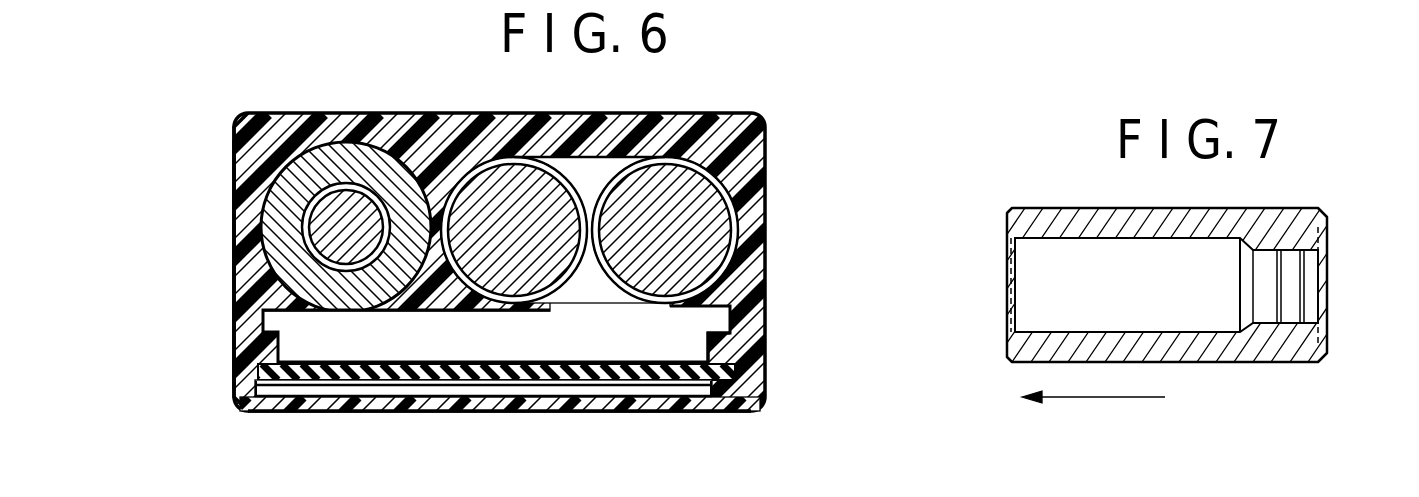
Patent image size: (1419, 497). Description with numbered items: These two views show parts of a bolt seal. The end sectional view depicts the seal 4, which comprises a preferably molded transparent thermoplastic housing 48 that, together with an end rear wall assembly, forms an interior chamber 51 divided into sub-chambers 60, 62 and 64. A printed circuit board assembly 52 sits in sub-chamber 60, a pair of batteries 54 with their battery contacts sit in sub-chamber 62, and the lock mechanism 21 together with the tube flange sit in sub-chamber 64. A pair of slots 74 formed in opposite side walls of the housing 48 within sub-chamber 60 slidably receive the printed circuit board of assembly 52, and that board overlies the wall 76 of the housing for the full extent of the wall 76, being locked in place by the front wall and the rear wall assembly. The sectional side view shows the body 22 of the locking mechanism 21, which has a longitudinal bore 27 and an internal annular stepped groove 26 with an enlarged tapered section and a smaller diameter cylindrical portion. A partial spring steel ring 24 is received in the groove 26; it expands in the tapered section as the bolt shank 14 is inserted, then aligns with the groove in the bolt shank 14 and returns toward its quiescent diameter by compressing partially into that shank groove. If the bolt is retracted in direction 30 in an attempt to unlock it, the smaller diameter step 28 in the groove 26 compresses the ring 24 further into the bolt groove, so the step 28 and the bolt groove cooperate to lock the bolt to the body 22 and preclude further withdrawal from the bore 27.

In FIG. 6, the seal 4 is at (525, 225).
In FIG. 6, the bolt shank 14 is at (349, 200).
In FIG. 6, the locking mechanism 21 is at (255, 281).
In FIG. 6, the body 22 is at (298, 278).
In FIG. 7, the body 22 is at (1006, 290).
In FIG. 7, the partial spring steel ring 24 is at (1372, 0).
In FIG. 7, the internal annular stepped groove 26 is at (1290, 290).
In FIG. 7, the longitudinal bore 27 is at (1083, 330).
In FIG. 7, the smaller diameter step 28 is at (1280, 282).
In FIG. 7, the direction 30 is at (1098, 397).
In FIG. 6, the housing 48 is at (782, 113).
In FIG. 6, the interior chamber 51 is at (683, 348).
In FIG. 6, the printed circuit board assembly 52 is at (358, 364).
In FIG. 6, the batteries 54 is at (512, 203).
In FIG. 6, the sub-chamber 60 is at (298, 352).
In FIG. 6, the sub-chamber 62 is at (592, 284).
In FIG. 6, the sub-chamber 64 is at (300, 157).
In FIG. 6, the slots 74 is at (262, 387).
In FIG. 6, the wall 76 is at (467, 412).